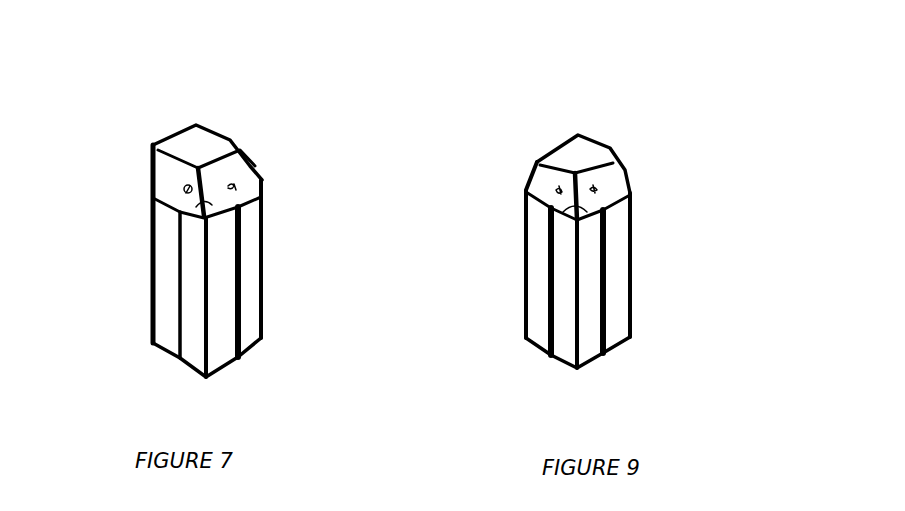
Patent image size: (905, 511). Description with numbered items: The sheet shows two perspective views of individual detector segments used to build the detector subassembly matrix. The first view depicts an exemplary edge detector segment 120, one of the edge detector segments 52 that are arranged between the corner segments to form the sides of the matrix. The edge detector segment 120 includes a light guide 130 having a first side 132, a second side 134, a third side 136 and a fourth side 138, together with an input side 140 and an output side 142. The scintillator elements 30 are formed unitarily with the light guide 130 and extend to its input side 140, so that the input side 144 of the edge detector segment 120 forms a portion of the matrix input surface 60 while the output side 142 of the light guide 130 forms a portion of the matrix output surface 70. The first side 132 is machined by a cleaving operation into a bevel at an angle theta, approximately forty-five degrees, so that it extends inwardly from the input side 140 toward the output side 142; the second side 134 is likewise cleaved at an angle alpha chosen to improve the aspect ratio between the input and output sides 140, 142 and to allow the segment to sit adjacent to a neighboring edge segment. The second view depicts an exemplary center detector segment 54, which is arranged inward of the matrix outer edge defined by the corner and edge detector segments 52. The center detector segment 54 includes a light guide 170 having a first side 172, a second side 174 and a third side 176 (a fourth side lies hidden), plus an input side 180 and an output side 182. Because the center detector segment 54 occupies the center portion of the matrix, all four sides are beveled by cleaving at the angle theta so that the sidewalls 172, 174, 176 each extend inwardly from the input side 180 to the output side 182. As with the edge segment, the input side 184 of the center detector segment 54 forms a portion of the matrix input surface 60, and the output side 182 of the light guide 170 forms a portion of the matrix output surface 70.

In FIG. 7, the light guide 130 is at (133, 136).
In FIG. 7, the third side 136 is at (173, 129).
In FIG. 7, the output side 142 is at (201, 137).
In FIG. 7, the edge detector segment 120 is at (328, 67).
In FIG. 7, the matrix output surface 70 is at (258, 88).
In FIG. 7, the edge detector segments 52 is at (291, 108).
In FIG. 7, the first side 132 is at (238, 157).
In FIG. 7, the second side 134 is at (251, 161).
In FIG. 7, the fourth side 138 is at (165, 175).
In FIG. 7, the input side 140 is at (150, 202).
In FIG. 7, the scintillator elements 30 is at (153, 312).
In FIG. 7, the input side 144 is at (157, 385).
In FIG. 7, the matrix input surface 60 is at (185, 386).
In FIG. 9, the light guide 170 is at (554, 118).
In FIG. 9, the third side 176 is at (543, 155).
In FIG. 9, the output side 182 is at (580, 150).
In FIG. 9, the second side 174 is at (612, 152).
In FIG. 9, the center detector segment 54 is at (695, 126).
In FIG. 9, the first side 172 is at (539, 188).
In FIG. 9, the input side 180 is at (637, 200).
In FIG. 9, the input side 184 is at (533, 371).